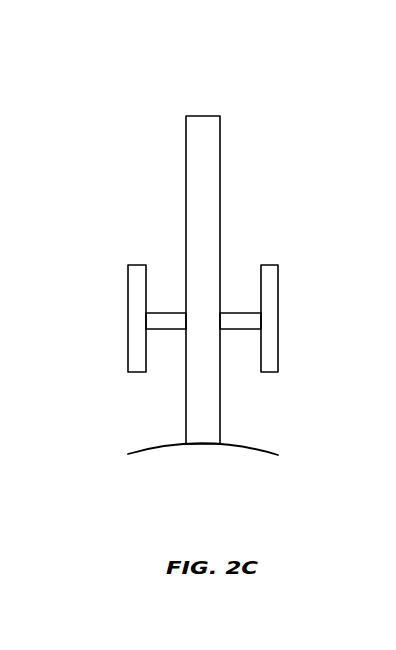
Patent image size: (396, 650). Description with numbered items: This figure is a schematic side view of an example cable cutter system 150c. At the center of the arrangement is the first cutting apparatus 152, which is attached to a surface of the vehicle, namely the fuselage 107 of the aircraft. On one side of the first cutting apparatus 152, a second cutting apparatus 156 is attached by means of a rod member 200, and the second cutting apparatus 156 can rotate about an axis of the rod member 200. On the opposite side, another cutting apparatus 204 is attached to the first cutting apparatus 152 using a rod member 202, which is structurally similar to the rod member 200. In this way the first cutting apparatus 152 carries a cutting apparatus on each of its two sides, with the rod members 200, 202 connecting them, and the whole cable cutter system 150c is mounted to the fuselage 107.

The cable cutter system 150c is at (152, 112).
The first cutting apparatus 152 is at (220, 132).
The other cutting apparatus 204 is at (128, 313).
The rod member 202 is at (170, 312).
The rod member 200 is at (233, 312).
The second cutting apparatus 156 is at (278, 320).
The fuselage 107 is at (129, 453).